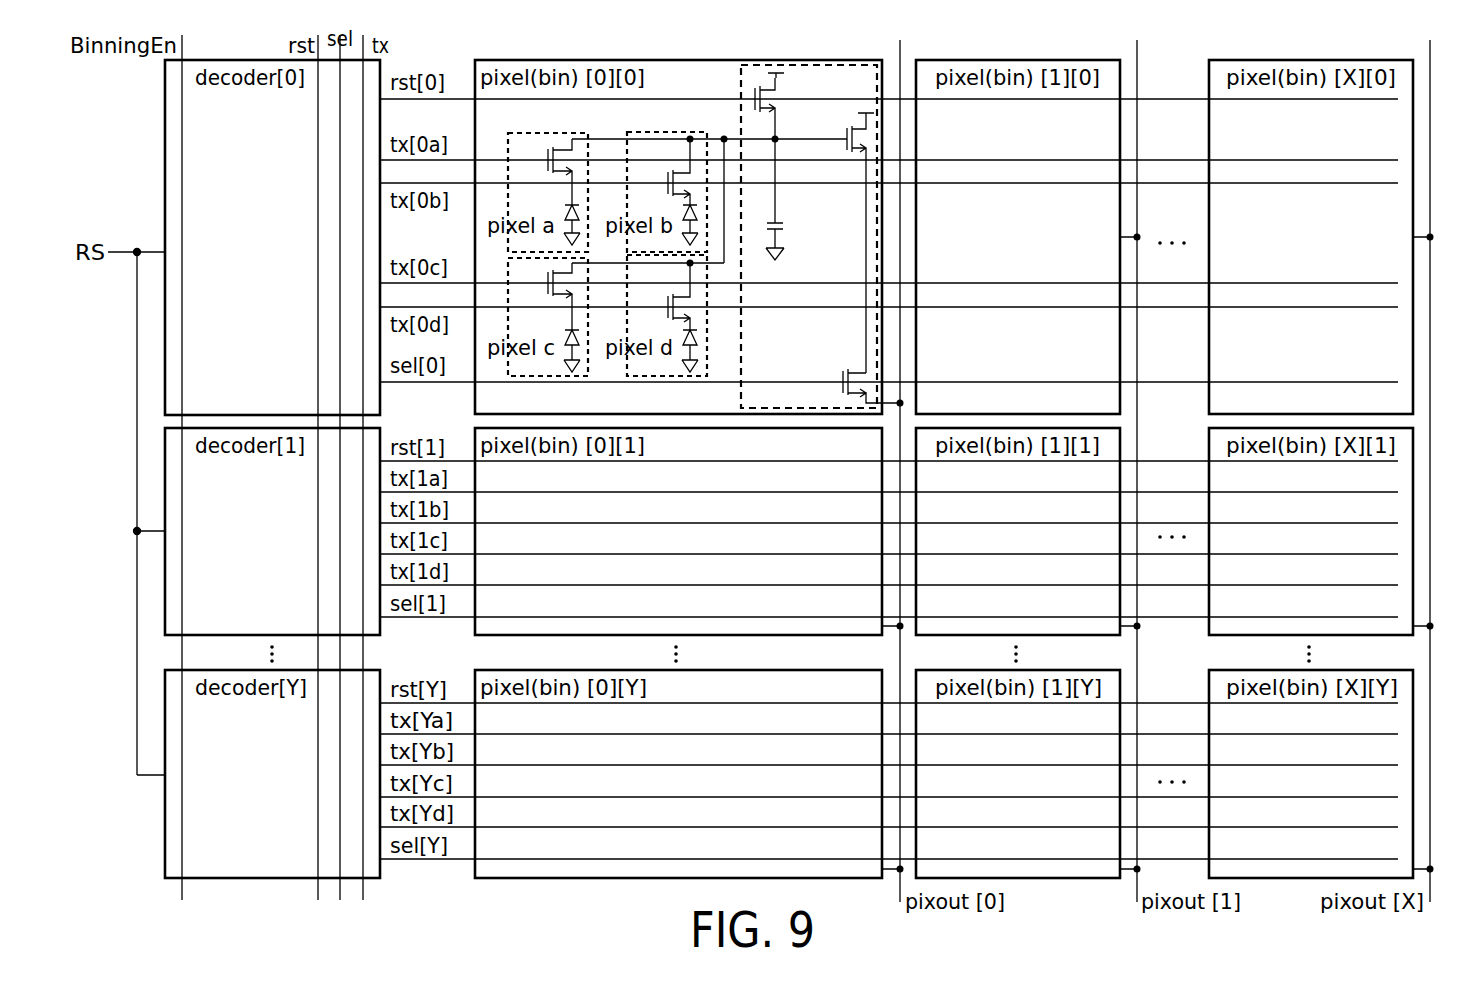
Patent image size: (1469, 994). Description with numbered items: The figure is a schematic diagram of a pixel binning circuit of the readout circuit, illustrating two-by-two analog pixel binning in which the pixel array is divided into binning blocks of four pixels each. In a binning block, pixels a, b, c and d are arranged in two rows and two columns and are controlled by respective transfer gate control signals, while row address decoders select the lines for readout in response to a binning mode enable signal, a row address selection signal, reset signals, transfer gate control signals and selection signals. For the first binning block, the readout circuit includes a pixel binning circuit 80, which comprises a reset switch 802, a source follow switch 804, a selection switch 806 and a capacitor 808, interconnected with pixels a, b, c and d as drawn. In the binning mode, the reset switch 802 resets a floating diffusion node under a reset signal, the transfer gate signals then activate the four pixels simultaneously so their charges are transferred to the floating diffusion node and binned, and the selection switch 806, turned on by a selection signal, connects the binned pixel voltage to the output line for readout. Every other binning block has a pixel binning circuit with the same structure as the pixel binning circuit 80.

The pixel binning circuit 80 is at (740, 77).
The reset switch 802 is at (772, 90).
The source follow switch 804 is at (845, 128).
The selection switch 806 is at (843, 370).
The capacitor 808 is at (782, 230).